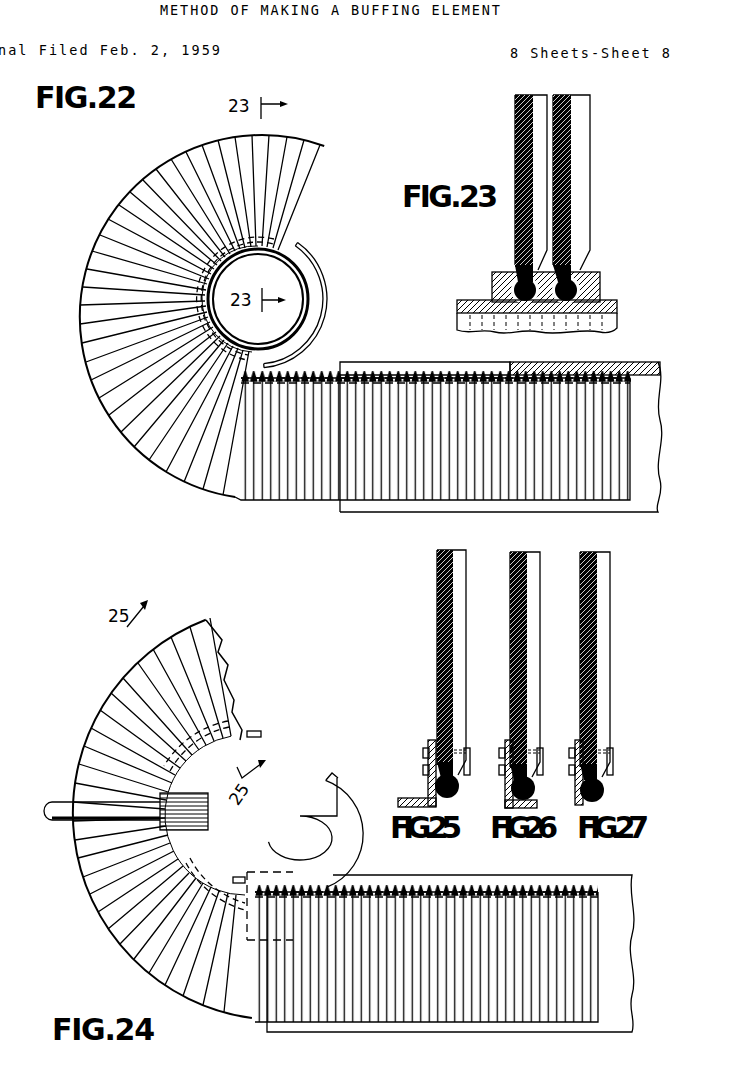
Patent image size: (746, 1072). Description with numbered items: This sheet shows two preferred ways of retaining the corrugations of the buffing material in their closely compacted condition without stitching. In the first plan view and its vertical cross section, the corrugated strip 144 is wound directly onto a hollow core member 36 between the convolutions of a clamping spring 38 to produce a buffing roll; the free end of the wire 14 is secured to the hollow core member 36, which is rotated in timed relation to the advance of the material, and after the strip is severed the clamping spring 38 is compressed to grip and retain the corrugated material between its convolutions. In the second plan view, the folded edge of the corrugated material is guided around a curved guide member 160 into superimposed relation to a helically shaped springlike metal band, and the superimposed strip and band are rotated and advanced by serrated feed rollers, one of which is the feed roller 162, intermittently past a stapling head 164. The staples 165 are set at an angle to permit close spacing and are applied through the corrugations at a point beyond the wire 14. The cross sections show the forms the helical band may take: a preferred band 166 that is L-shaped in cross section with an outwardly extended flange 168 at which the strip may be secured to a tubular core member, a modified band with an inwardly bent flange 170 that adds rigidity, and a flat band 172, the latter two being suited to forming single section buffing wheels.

In FIG. 22, the wire 14 is at (280, 270).
In FIG. 23, the wire 14 is at (517, 313).
In FIG. 24, the wire 14 is at (605, 893).
In FIG. 22, the hollow core member 36 is at (303, 297).
In FIG. 23, the hollow core member 36 is at (603, 302).
In FIG. 22, the clamping spring 38 is at (305, 263).
In FIG. 23, the clamping spring 38 is at (580, 273).
In FIG. 22, the corrugated strip 144 is at (602, 502).
In FIG. 23, the corrugated strip 144 is at (517, 125).
In FIG. 24, the curved guide member 160 is at (268, 858).
In FIG. 24, the serrated feed roller 162 is at (96, 903).
In FIG. 24, the stapling head 164 is at (262, 941).
In FIG. 24, the staples 165 is at (248, 742).
In FIG. 25, the staples 165 is at (466, 760).
In FIG. 26, the staples 165 is at (542, 760).
In FIG. 27, the staples 165 is at (611, 757).
In FIG. 25, the L-shaped helical metal band 166 is at (428, 775).
In FIG. 25, the outwardly extended flange 168 is at (412, 802).
In FIG. 26, the inwardly bent flange 170 is at (530, 807).
In FIG. 27, the flat band 172 is at (577, 743).